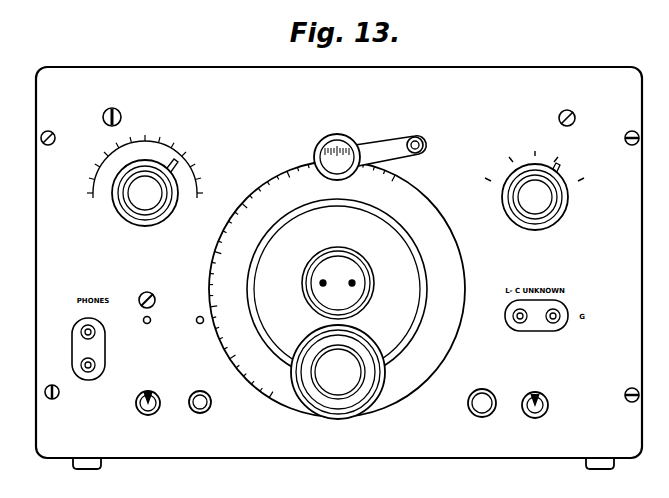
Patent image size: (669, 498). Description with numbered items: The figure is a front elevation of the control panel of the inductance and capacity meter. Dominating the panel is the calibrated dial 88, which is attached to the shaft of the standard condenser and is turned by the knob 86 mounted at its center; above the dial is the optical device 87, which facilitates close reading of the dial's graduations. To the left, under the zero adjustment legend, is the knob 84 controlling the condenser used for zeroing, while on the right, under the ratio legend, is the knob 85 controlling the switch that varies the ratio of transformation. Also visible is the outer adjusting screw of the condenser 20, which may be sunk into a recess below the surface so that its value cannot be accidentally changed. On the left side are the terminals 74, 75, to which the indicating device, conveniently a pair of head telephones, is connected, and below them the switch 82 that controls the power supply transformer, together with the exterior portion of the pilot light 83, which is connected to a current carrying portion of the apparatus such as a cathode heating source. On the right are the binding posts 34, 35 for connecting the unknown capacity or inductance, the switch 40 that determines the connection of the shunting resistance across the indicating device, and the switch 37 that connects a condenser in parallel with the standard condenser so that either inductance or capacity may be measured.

The condenser 20 is at (147, 291).
The binding post 34 is at (558, 312).
The binding post 35 is at (522, 322).
The switch 37 is at (547, 409).
The switch 40 is at (481, 406).
The terminal 74 is at (84, 331).
The terminal 75 is at (84, 364).
The switch 82 is at (138, 409).
The pilot light 83 is at (210, 410).
The knob 84 is at (135, 199).
The knob 85 is at (542, 203).
The knob 86 is at (343, 273).
The optical device 87 is at (344, 144).
The calibrated dial 88 is at (290, 162).